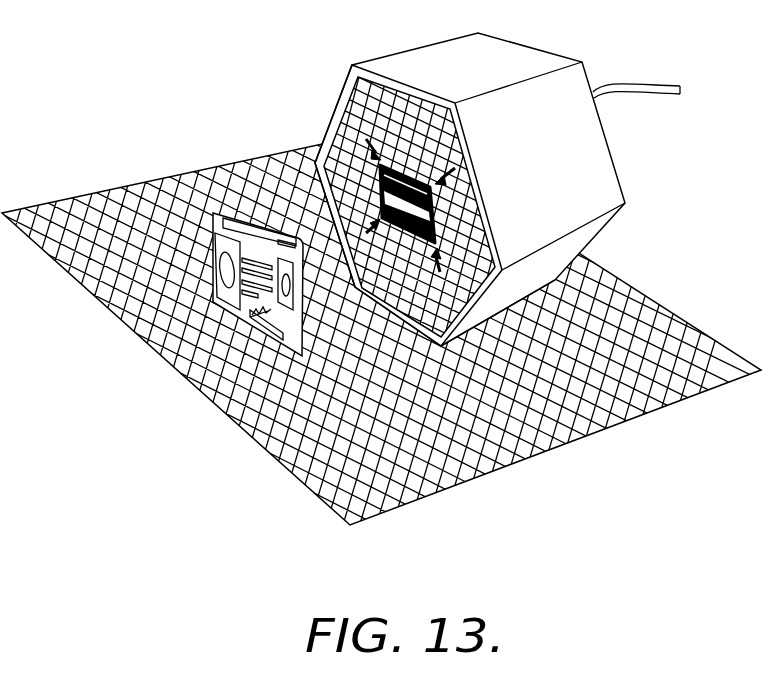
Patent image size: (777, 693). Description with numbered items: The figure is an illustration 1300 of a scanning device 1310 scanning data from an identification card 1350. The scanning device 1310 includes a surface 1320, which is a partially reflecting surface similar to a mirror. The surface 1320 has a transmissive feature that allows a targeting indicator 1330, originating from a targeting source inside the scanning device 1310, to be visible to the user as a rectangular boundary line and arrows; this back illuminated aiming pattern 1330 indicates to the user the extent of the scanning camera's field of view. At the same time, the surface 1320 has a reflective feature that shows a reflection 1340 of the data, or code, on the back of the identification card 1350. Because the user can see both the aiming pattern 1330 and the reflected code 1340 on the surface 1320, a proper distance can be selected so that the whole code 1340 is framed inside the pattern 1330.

The illustration 1300 is at (152, 80).
The scanning device 1310 is at (530, 47).
The surface 1320 is at (372, 107).
The targeting indicator 1330 is at (443, 222).
The reflection 1340 is at (318, 198).
The identification card 1350 is at (228, 316).